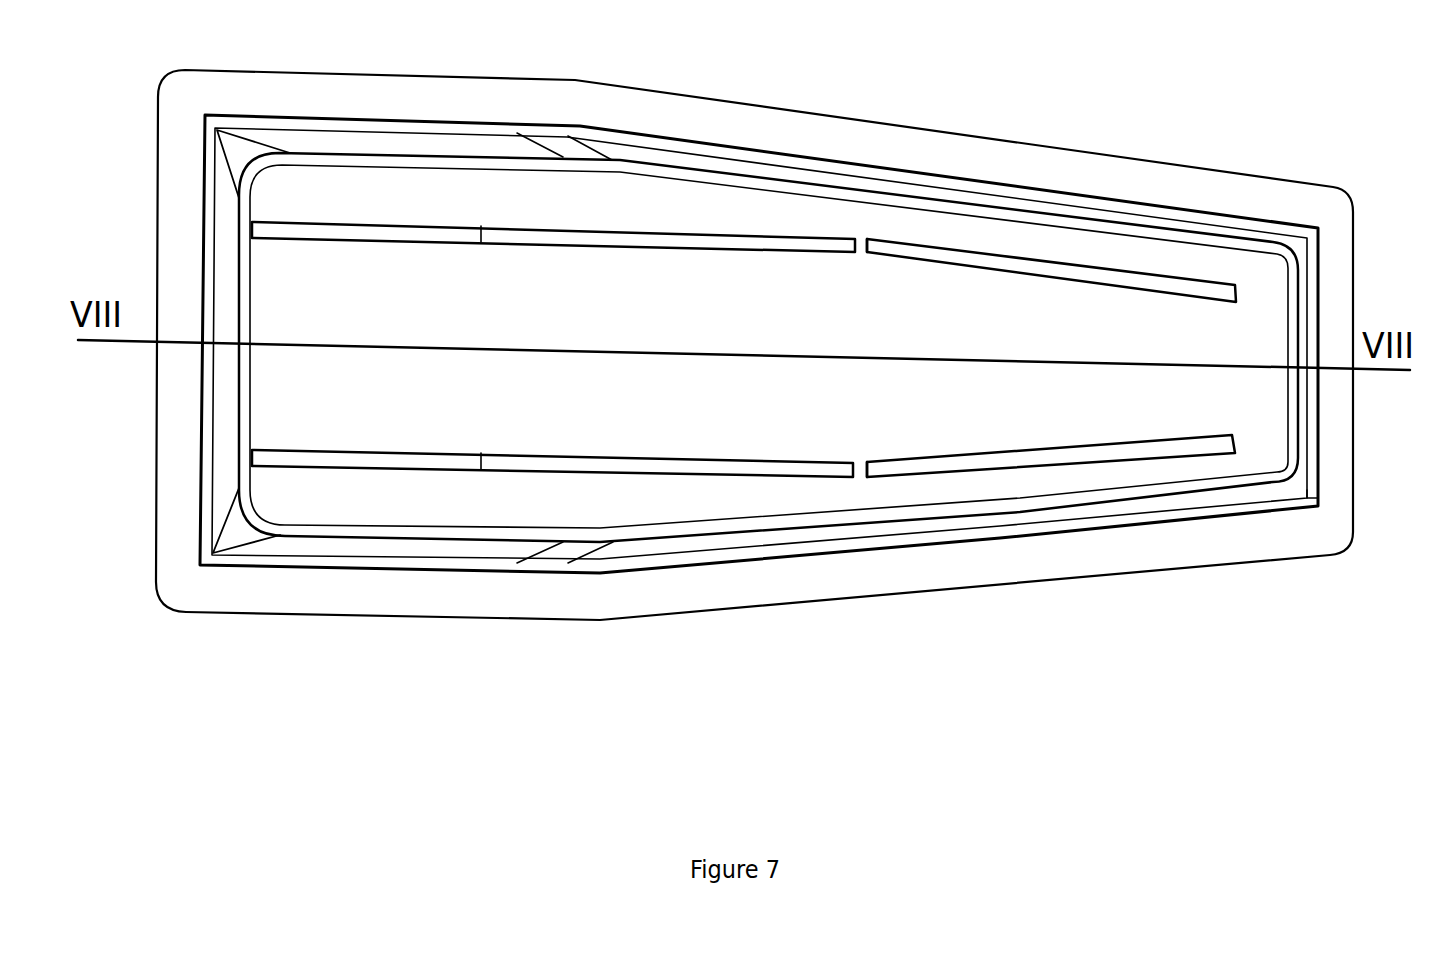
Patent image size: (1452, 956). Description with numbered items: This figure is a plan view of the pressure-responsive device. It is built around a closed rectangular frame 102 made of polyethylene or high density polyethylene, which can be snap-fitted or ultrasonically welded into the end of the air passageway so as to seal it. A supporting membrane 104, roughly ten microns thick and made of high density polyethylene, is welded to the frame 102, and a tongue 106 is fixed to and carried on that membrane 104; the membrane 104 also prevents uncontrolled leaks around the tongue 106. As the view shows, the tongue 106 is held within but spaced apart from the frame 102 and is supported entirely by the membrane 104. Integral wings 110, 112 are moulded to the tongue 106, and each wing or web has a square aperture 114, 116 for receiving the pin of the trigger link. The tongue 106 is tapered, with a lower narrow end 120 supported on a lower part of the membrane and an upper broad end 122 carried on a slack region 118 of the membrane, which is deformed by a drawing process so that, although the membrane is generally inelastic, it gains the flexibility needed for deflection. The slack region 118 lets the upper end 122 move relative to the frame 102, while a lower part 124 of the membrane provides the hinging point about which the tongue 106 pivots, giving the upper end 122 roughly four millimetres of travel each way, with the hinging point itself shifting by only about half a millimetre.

The frame 102 is at (838, 123).
The supporting membrane 104 is at (1133, 508).
The tongue 106 is at (978, 237).
The wing 110 is at (752, 233).
The wing 112 is at (755, 468).
The square aperture 114 is at (482, 470).
The square aperture 116 is at (494, 231).
The slack region 118 is at (234, 147).
The lower narrow end 120 is at (1262, 452).
The upper broad end 122 is at (266, 424).
The lower part of the membrane 124 is at (1302, 497).